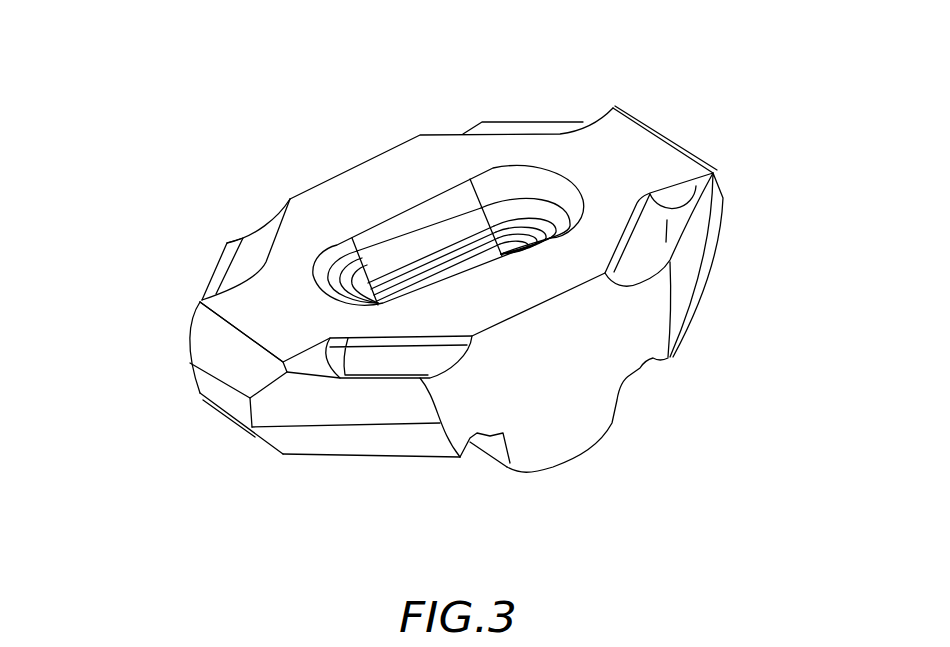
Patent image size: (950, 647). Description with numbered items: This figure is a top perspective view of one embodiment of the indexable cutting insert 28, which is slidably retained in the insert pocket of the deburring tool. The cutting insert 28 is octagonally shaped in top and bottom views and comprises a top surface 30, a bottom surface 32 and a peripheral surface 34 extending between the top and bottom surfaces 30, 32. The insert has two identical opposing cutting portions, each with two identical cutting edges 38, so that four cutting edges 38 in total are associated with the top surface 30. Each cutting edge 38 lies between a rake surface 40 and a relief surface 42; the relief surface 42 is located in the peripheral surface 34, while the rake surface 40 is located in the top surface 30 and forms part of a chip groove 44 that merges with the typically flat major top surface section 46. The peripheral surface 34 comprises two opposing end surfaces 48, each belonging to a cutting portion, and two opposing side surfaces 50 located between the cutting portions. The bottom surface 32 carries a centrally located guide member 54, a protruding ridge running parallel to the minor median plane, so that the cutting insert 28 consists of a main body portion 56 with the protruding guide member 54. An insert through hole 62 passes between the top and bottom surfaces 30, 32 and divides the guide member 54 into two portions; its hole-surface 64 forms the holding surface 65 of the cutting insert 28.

The cutting insert 28 is at (228, 71).
The top surface 30 is at (311, 185).
The bottom surface 32 is at (381, 490).
The peripheral surface 34 is at (283, 463).
The cutting edge 38 is at (220, 253).
The rake surface 40 is at (223, 276).
The relief surface 42 is at (347, 403).
The chip groove 44 is at (713, 173).
The major top surface section 46 is at (436, 160).
The end surface 48 is at (598, 347).
The side surface 50 is at (218, 393).
The guide member 54 is at (470, 473).
The main body portion 56 is at (143, 350).
The insert through hole 62 is at (557, 181).
The hole-surface 64 is at (518, 198).
The holding surface 65 is at (408, 218).